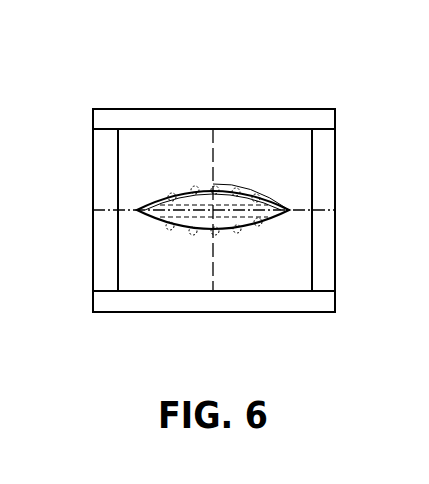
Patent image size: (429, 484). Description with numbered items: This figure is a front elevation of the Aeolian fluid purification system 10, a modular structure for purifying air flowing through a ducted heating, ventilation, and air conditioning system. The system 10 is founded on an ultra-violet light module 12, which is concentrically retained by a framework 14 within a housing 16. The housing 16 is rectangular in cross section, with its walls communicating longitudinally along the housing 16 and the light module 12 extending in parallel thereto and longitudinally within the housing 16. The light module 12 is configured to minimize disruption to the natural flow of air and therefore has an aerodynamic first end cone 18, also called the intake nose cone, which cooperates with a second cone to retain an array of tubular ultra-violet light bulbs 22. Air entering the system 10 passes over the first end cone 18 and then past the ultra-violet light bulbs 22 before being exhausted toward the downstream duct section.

The Aeolian fluid purification system 10 is at (200, 101).
The ultra-violet light module 12 is at (183, 162).
The framework 14 is at (323, 152).
The housing 16 is at (135, 291).
The first aerodynamic end cone 18 is at (262, 226).
The tubular ultra-violet light bulbs 22 is at (245, 186).